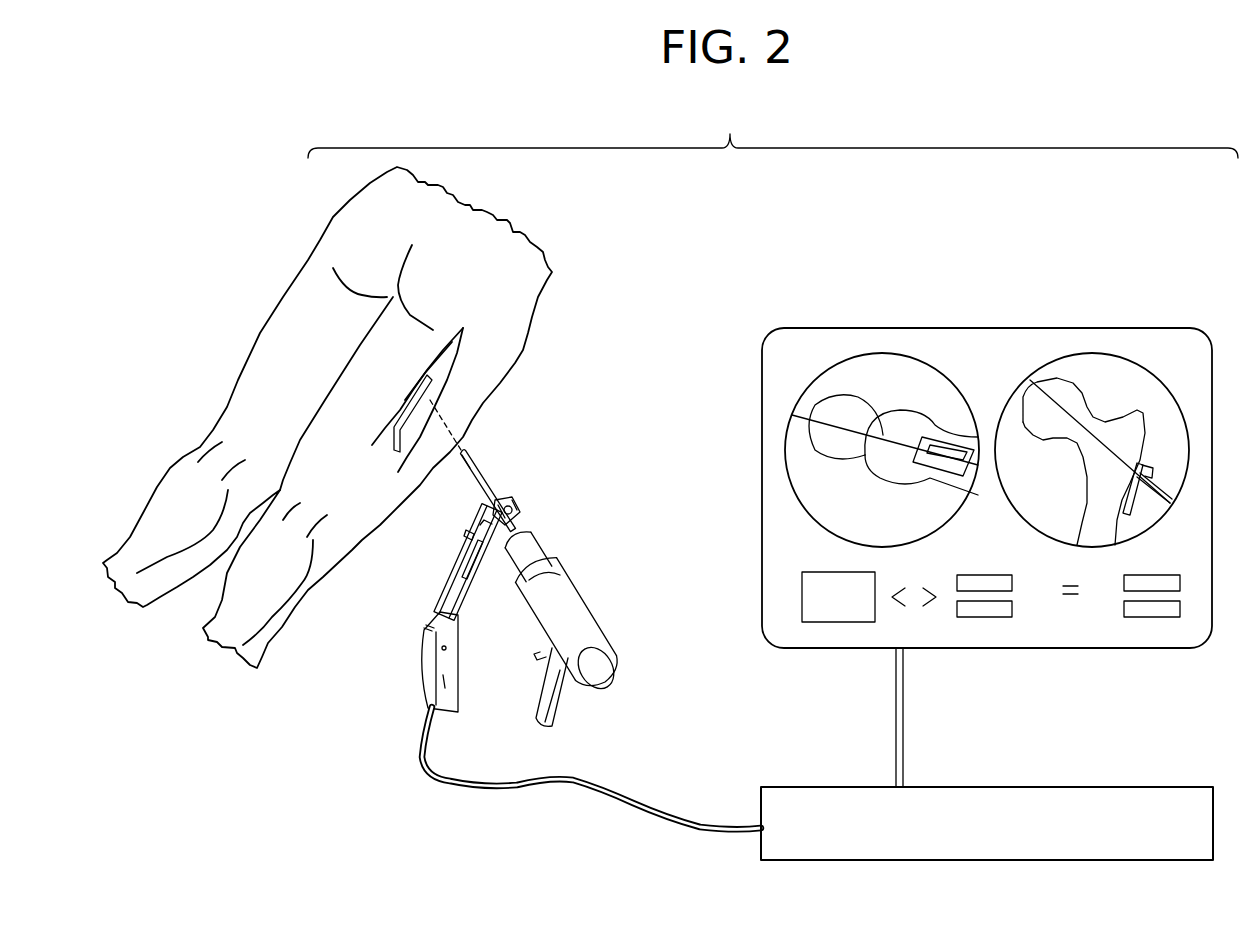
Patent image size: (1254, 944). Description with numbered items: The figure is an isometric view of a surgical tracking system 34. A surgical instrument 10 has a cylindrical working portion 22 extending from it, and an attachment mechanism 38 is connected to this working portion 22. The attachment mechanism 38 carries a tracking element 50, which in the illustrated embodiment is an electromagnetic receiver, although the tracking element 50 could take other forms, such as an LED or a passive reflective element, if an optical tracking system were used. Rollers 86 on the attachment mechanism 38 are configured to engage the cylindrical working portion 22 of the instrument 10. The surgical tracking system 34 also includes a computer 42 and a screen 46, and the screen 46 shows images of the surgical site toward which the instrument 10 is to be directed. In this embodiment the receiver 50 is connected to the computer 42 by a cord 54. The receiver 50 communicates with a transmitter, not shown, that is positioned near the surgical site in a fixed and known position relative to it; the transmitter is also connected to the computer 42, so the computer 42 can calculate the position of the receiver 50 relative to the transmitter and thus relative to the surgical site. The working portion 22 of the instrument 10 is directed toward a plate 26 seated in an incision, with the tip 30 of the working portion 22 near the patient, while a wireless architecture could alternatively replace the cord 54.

The instrument 10 is at (567, 598).
The working portion 22 is at (478, 470).
The implant plate 26 is at (447, 427).
The wire tip 30 is at (462, 465).
The surgical tracking system 34 is at (773, 128).
The attachment mechanism 38 is at (446, 566).
The computer 42 is at (1003, 786).
The screen 46 is at (1017, 393).
The tracking element 50 is at (430, 657).
The cord 54 is at (630, 807).
The rollers 86 is at (520, 503).